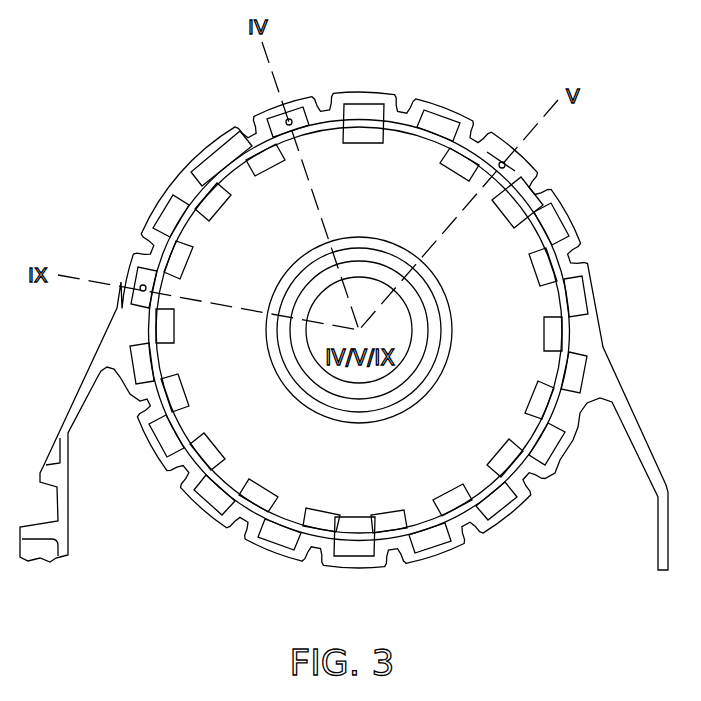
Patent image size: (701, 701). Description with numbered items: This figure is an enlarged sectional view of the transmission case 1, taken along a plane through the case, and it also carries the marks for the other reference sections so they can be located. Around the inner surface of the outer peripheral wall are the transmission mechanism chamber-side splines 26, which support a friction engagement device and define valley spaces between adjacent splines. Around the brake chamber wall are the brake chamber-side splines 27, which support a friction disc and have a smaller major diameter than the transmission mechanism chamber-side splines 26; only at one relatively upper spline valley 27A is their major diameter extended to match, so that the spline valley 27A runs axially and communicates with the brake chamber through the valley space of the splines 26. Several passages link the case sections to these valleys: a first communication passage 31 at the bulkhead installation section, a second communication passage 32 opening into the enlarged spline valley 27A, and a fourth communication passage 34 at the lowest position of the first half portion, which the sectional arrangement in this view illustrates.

The transmission case 1 is at (156, 181).
The transmission mechanism chamber-side splines 26 is at (543, 226).
The brake chamber-side splines 27 is at (547, 300).
The spline valley 27A is at (500, 178).
The first communication passage 31 is at (290, 119).
The second communication passage 32 is at (502, 162).
The fourth communication passage 34 is at (141, 286).